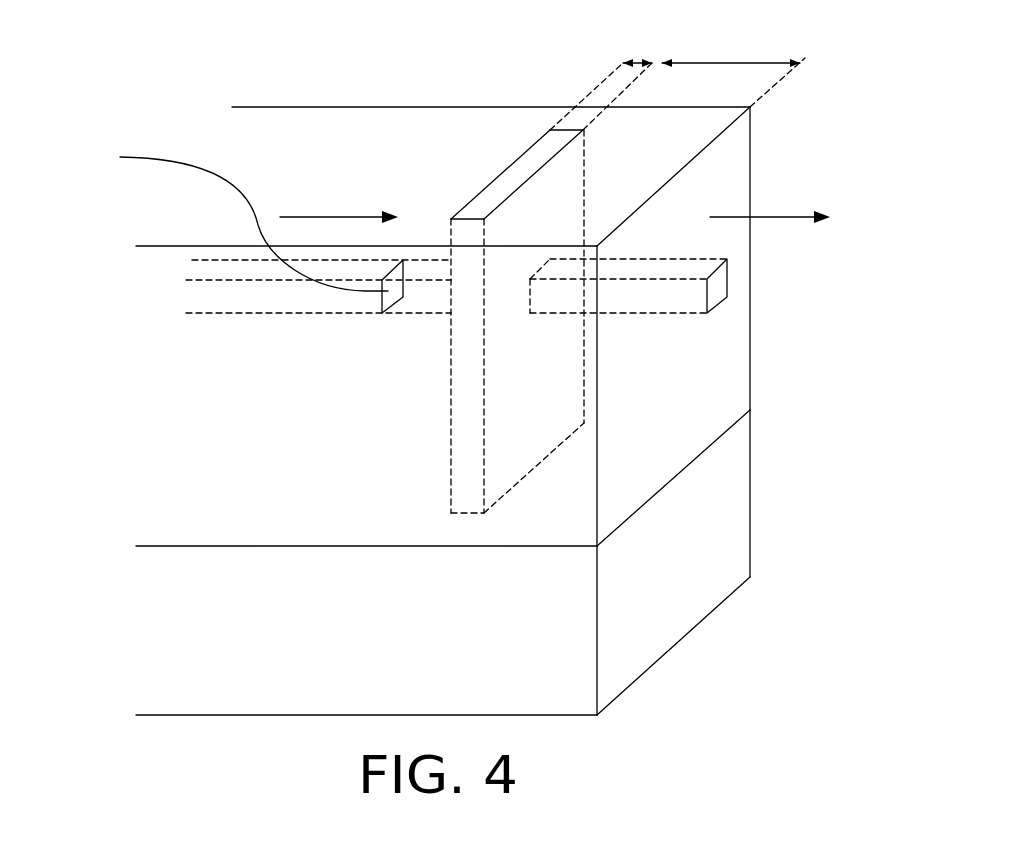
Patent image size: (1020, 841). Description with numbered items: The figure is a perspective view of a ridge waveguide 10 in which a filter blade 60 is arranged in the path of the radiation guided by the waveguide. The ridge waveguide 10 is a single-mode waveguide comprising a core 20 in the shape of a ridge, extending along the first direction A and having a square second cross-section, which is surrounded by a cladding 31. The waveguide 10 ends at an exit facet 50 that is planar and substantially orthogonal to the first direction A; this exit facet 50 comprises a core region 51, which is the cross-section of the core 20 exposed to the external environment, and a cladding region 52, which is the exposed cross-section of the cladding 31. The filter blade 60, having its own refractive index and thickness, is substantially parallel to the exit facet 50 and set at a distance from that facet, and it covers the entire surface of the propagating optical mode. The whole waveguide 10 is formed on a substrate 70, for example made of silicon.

The ridge waveguide 10 is at (170, 80).
The core 20 is at (215, 293).
The cladding 31 is at (215, 437).
The exit facet 50 is at (737, 135).
The core region 51 is at (727, 285).
The cladding region 52 is at (667, 438).
The filter blade 60 is at (548, 130).
The substrate 70 is at (698, 562).